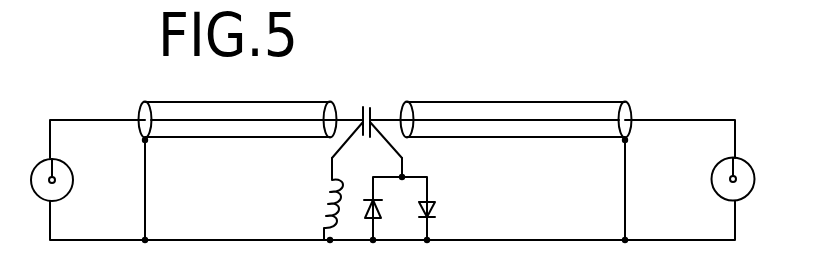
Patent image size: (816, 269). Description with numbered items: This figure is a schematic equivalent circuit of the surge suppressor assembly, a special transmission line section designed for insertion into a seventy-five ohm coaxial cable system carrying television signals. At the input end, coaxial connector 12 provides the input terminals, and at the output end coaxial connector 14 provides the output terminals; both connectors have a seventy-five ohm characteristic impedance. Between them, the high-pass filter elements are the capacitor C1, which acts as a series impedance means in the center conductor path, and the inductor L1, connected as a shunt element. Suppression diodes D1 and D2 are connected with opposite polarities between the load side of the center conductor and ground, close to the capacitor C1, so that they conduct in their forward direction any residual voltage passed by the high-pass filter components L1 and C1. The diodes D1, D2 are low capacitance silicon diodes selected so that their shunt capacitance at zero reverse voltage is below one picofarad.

The coaxial connector 12 is at (74, 180).
The coaxial connector 14 is at (712, 177).
The capacitor C1 is at (367, 118).
The inductor L1 is at (319, 199).
The diode D1 is at (373, 199).
The diode D2 is at (437, 208).